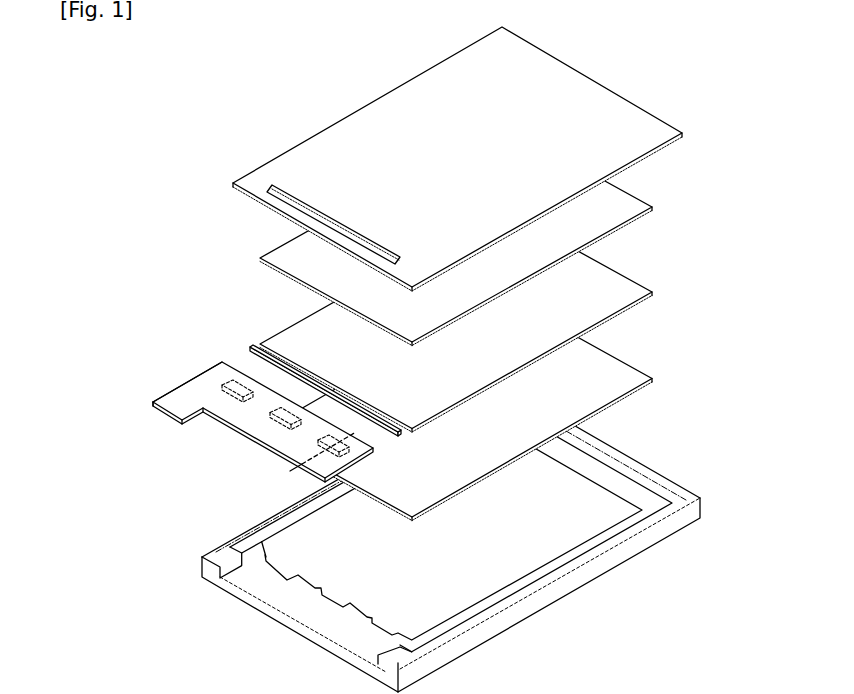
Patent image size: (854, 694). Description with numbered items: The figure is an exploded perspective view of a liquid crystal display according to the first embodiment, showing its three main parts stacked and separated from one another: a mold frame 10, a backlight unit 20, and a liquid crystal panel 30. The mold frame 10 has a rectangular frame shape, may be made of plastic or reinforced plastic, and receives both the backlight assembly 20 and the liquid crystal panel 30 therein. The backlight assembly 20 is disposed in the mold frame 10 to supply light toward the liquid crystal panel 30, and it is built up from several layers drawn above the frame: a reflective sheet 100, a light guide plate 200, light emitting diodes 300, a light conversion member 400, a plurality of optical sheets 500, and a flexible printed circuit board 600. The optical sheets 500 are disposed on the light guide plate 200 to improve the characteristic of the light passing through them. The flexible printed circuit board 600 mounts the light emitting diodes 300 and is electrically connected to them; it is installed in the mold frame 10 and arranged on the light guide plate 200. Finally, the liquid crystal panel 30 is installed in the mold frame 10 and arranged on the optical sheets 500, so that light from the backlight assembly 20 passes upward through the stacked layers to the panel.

The mold frame 10 is at (209, 540).
The backlight unit 20 is at (359, 322).
The liquid crystal panel 30 is at (302, 152).
The reflective sheet 100 is at (402, 492).
The light guide plate 200 is at (222, 362).
The light emitting diodes 300 is at (230, 397).
The light conversion member 400 is at (252, 349).
The optical sheets 500 is at (318, 273).
The flexible printed circuit board 600 is at (213, 372).